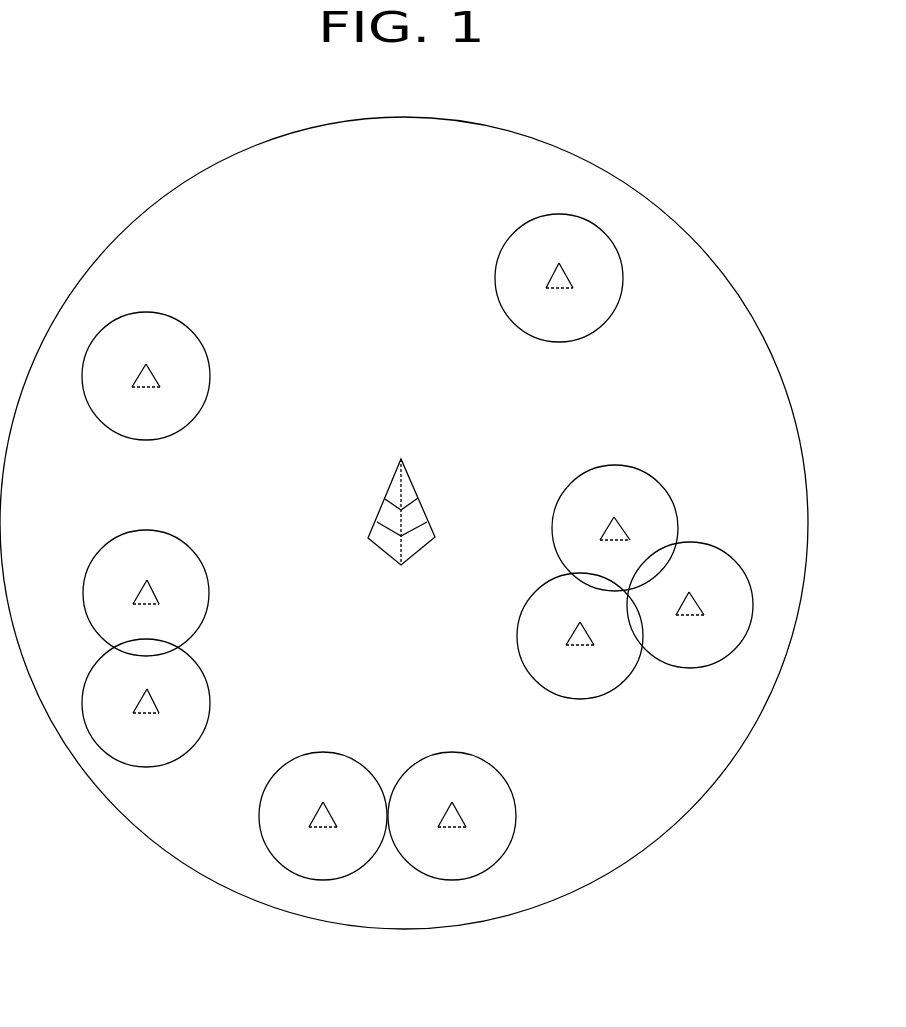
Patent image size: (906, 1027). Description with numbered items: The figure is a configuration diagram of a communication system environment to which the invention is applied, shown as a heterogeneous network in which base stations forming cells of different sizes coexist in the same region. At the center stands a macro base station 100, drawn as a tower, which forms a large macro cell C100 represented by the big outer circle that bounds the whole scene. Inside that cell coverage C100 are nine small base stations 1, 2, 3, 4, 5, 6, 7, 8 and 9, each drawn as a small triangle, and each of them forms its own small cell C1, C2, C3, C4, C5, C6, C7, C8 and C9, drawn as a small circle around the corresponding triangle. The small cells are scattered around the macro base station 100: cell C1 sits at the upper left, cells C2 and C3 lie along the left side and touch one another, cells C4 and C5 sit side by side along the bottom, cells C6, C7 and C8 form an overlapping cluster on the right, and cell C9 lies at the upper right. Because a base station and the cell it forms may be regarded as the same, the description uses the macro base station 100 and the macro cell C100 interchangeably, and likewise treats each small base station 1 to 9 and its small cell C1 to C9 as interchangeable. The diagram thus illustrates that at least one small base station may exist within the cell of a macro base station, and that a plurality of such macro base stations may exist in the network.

The small base station 1 is at (139, 379).
The small base station 2 is at (138, 600).
The small base station 3 is at (139, 708).
The small base station 4 is at (317, 818).
The small base station 5 is at (459, 820).
The small base station 6 is at (588, 637).
The small base station 7 is at (698, 606).
The small base station 8 is at (625, 528).
The small base station 9 is at (551, 279).
The macro base station 100 is at (410, 478).
The small cell C1 is at (192, 330).
The small cell C2 is at (100, 547).
The small cell C3 is at (100, 657).
The small cell C4 is at (277, 771).
The small cell C5 is at (497, 771).
The small cell C6 is at (534, 591).
The small cell C7 is at (710, 542).
The small cell C8 is at (660, 482).
The small cell C9 is at (608, 318).
The macro cell C100 is at (670, 215).